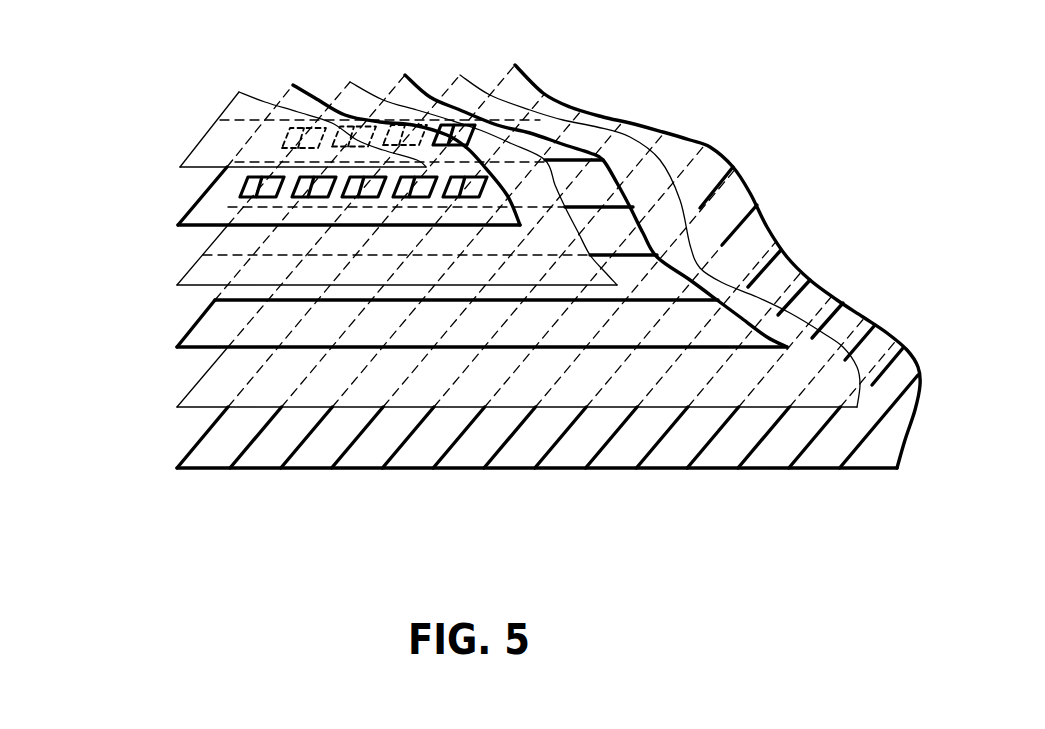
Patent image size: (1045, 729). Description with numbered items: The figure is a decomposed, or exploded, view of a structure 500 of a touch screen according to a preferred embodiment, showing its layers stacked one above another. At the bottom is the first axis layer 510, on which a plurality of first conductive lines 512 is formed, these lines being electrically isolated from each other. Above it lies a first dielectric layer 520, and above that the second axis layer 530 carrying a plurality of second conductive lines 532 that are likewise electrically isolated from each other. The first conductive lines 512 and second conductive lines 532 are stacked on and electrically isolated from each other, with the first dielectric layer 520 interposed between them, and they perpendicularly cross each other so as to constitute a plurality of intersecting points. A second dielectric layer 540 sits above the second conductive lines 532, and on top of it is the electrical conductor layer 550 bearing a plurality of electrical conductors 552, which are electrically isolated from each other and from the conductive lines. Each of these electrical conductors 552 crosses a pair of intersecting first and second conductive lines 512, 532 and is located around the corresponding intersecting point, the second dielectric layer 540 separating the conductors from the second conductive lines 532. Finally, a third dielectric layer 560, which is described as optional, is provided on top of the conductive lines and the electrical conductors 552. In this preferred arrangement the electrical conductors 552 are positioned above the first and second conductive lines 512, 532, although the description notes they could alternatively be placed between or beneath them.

The structure of the touch screen 500 is at (844, 63).
The first axis layer 510 is at (205, 443).
The first conductive lines 512 is at (861, 445).
The first dielectric layer 520 is at (205, 383).
The second axis layer 530 is at (207, 321).
The second conductive lines 532 is at (640, 298).
The second dielectric layer 540 is at (205, 269).
The electrical conductor layer 550 is at (205, 208).
The electrical conductors 552 is at (240, 180).
The third dielectric layer 560 is at (203, 146).